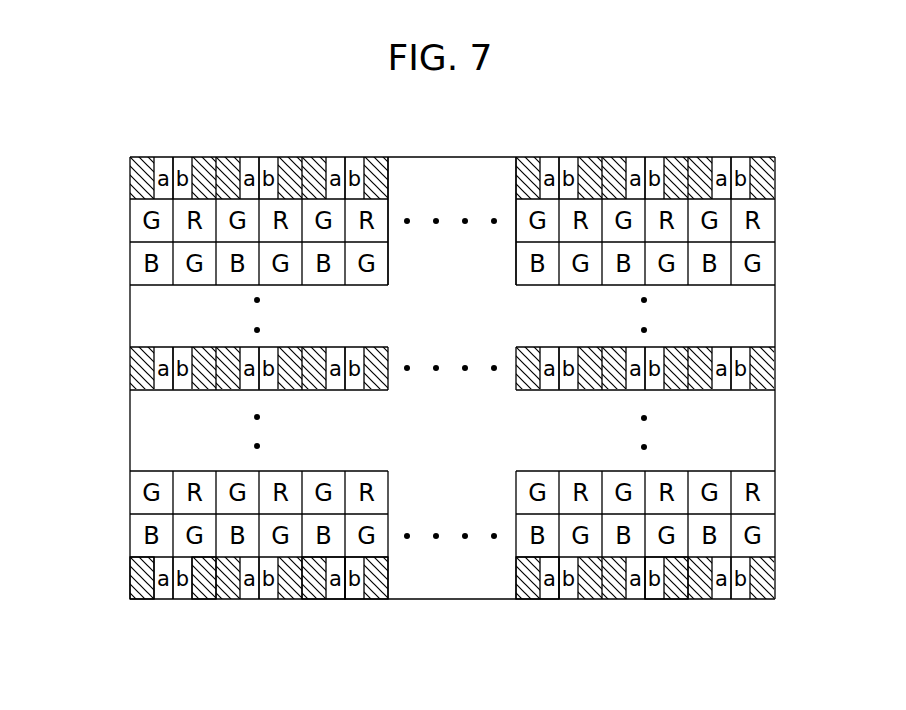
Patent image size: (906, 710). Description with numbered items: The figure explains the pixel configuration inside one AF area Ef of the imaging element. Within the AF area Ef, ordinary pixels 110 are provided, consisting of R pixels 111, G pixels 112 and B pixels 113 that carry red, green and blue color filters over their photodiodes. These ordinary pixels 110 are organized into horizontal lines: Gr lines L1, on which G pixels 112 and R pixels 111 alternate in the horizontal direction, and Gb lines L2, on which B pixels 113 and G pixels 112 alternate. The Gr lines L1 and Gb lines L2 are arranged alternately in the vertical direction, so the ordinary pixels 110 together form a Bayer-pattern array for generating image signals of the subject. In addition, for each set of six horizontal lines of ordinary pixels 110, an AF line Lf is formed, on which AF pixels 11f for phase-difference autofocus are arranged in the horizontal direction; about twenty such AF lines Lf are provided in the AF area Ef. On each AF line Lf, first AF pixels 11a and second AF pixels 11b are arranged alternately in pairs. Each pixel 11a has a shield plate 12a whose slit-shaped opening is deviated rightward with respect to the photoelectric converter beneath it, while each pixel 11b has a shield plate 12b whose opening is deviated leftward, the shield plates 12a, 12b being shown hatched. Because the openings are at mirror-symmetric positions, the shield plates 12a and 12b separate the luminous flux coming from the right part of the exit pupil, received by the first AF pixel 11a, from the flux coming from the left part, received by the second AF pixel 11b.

The AF area Ef is at (188, 150).
The ordinary pixels 110 is at (384, 207).
The R pixels 111 is at (777, 216).
The G pixels 112 is at (777, 260).
The B pixels 113 is at (129, 262).
The Gr lines L1 is at (124, 494).
The Gb lines L2 is at (124, 537).
The AF line Lf is at (124, 581).
The shield plate 12a is at (141, 597).
The shield plate 12b is at (207, 597).
The first AF pixel 11a is at (343, 601).
The second AF pixel 11b is at (346, 601).
The AF pixels 11f is at (550, 610).